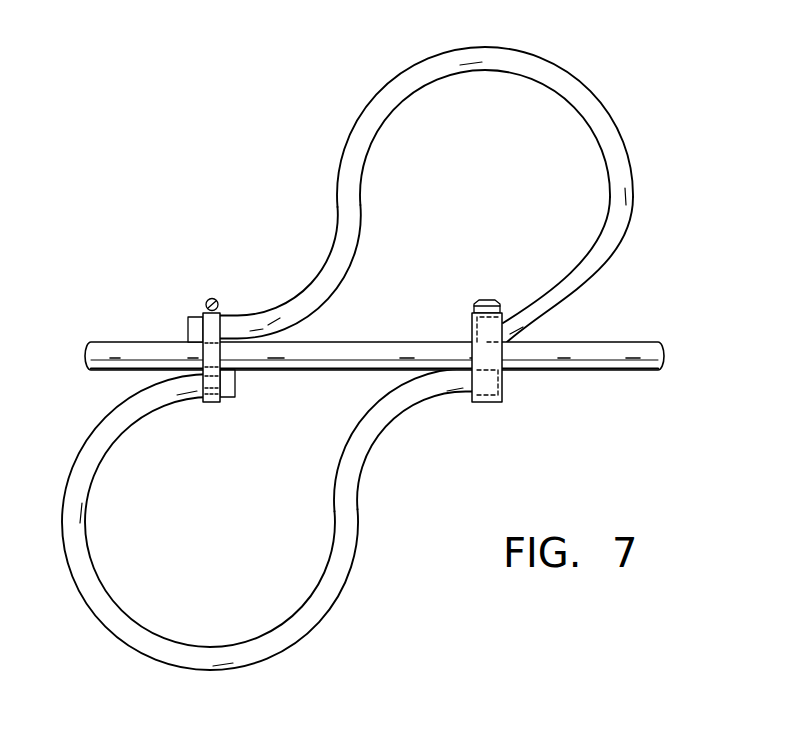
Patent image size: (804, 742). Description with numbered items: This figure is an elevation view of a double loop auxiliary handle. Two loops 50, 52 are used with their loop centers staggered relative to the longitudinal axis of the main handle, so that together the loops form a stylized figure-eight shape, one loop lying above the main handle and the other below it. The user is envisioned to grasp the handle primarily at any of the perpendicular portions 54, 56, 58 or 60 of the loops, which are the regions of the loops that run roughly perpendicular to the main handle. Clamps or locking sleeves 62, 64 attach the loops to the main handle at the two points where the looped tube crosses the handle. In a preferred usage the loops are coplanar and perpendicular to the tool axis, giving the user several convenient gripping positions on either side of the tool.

The loop 50 is at (226, 515).
The loop 52 is at (494, 171).
The perpendicular portion 54 is at (631, 173).
The perpendicular portion 56 is at (338, 158).
The perpendicular portion 58 is at (357, 523).
The perpendicular portion 60 is at (58, 528).
The clamp or locking sleeve 62 is at (203, 318).
The clamp or locking sleeve 64 is at (492, 403).